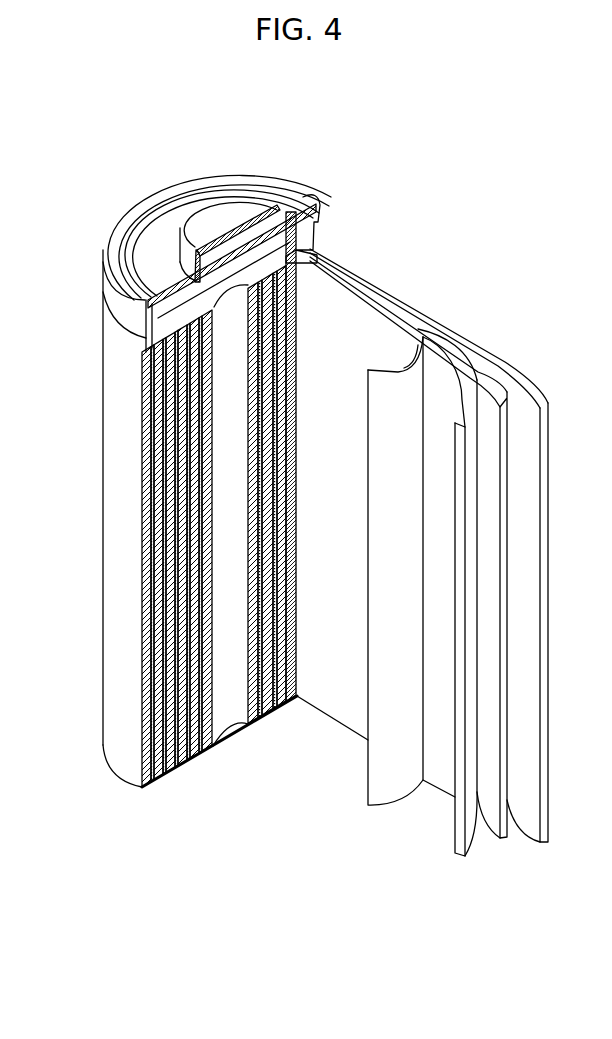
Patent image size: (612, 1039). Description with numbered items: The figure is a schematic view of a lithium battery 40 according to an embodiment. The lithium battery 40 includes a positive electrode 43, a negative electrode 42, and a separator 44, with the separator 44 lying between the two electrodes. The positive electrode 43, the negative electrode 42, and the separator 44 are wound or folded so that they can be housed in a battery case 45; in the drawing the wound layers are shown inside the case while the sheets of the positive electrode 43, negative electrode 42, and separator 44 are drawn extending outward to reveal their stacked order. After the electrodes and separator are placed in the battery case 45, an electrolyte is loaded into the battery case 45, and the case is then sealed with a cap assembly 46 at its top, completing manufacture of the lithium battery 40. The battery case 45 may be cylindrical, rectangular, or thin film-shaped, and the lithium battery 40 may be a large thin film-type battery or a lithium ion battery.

The lithium battery 40 is at (280, 127).
The negative electrode 42 is at (528, 380).
The positive electrode 43 is at (467, 378).
The separator 44 is at (397, 372).
The battery case 45 is at (110, 518).
The cap assembly 46 is at (205, 210).